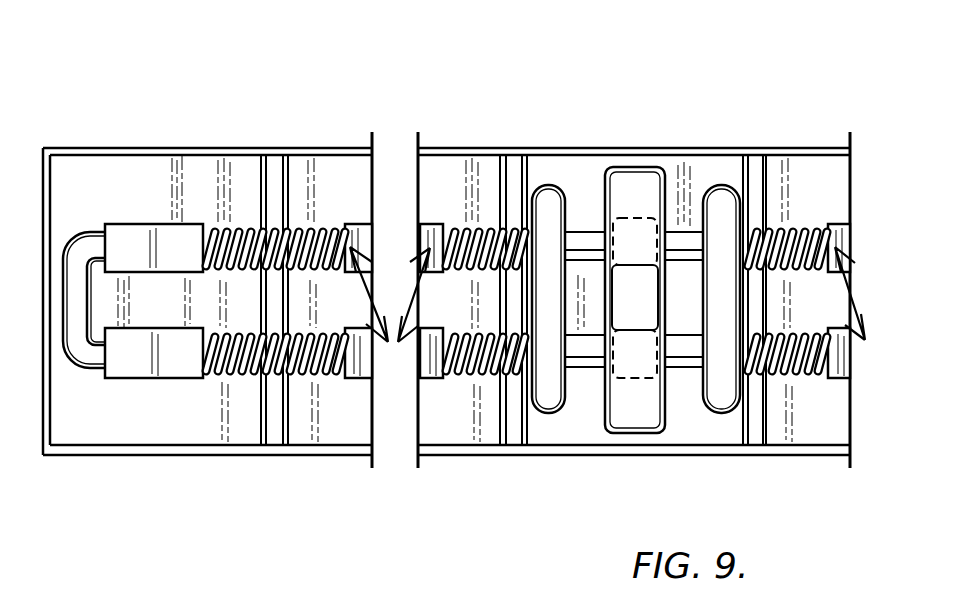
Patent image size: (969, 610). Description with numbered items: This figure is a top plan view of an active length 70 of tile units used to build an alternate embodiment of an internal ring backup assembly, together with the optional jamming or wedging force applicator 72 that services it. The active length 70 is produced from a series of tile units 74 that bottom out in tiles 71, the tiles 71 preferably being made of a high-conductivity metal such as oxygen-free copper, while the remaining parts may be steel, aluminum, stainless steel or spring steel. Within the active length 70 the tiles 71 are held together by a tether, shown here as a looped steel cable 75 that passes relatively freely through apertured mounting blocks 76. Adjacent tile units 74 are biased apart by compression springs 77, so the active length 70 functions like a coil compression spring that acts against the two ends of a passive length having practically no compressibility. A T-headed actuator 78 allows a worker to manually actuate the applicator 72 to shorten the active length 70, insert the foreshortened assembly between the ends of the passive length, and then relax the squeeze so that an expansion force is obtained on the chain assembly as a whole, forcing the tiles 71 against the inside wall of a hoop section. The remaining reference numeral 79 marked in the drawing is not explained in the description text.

The active length 70 is at (212, 88).
The tile 71 is at (168, 432).
The jamming or wedging force applicator 72 is at (585, 125).
The tile unit 74 is at (123, 203).
The looped steel cable 75 is at (75, 350).
The apertured mounting block 76 is at (178, 266).
The compression spring 77 is at (302, 223).
The T-headed actuator 78 is at (635, 300).
The frame corner 79 is at (36, 154).